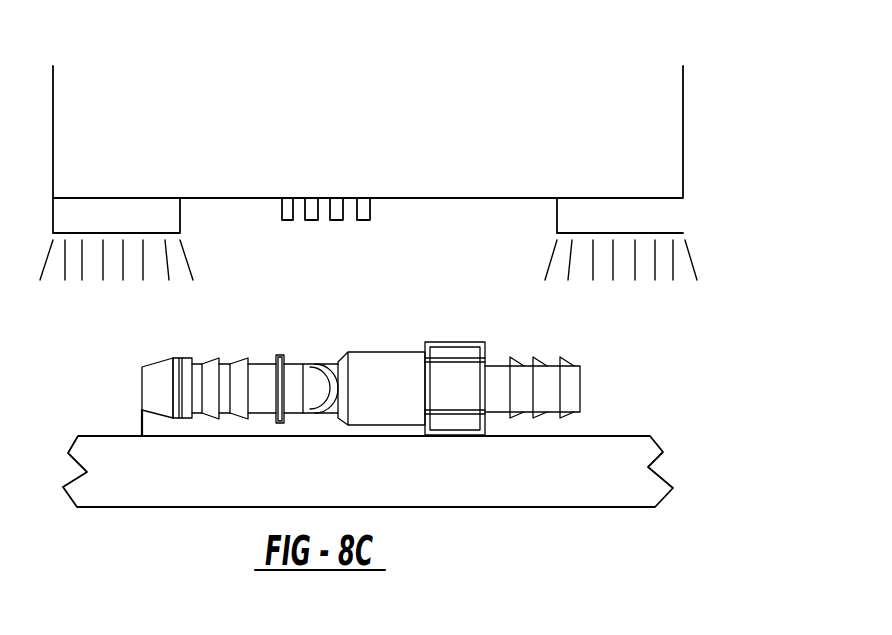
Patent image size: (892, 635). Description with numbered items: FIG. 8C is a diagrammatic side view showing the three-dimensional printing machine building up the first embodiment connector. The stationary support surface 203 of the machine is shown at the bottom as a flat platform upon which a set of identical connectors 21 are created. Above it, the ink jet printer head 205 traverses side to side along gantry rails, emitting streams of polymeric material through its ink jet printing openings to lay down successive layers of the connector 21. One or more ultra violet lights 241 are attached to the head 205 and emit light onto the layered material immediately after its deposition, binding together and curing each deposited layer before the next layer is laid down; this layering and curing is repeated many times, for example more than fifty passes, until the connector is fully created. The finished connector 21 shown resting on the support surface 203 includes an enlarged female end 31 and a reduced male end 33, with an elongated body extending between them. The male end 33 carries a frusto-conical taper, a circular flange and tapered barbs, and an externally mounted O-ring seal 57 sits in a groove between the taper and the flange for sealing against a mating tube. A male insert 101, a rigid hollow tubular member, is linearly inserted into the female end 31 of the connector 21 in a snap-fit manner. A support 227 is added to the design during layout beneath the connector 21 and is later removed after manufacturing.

The ink jet printer head 205 is at (683, 145).
The ultra violet light 241 is at (671, 218).
The male end 33 is at (143, 388).
The O-ring seal 57 is at (178, 362).
The connector 21 is at (388, 367).
The female end 31 is at (455, 437).
The male insert 101 is at (580, 383).
The support surface 203 is at (630, 436).
The support 227 is at (141, 412).